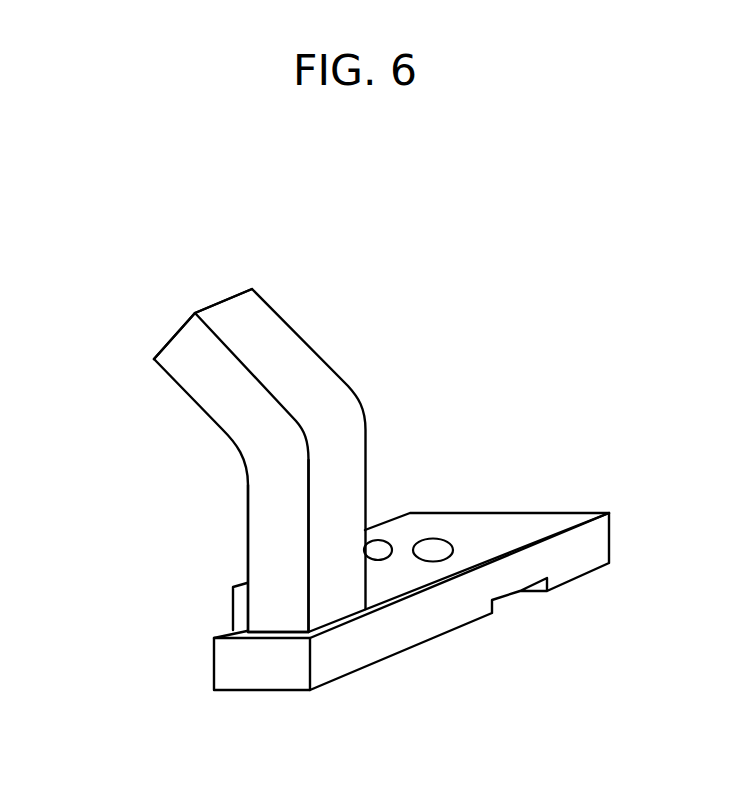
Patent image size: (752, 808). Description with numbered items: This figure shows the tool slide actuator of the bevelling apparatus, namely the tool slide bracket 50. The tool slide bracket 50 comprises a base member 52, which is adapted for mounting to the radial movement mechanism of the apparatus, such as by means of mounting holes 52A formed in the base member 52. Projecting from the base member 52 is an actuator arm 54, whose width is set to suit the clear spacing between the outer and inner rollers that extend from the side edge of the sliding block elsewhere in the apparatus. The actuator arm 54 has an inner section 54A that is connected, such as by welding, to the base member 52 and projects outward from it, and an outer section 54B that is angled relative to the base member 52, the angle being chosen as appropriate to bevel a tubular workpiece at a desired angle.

The tool slide bracket 50 is at (328, 431).
The base member 52 is at (411, 557).
The mounting holes 52A is at (377, 550).
The actuator arm 54 is at (256, 460).
The inner section 54A is at (247, 542).
The outer section 54B is at (183, 389).